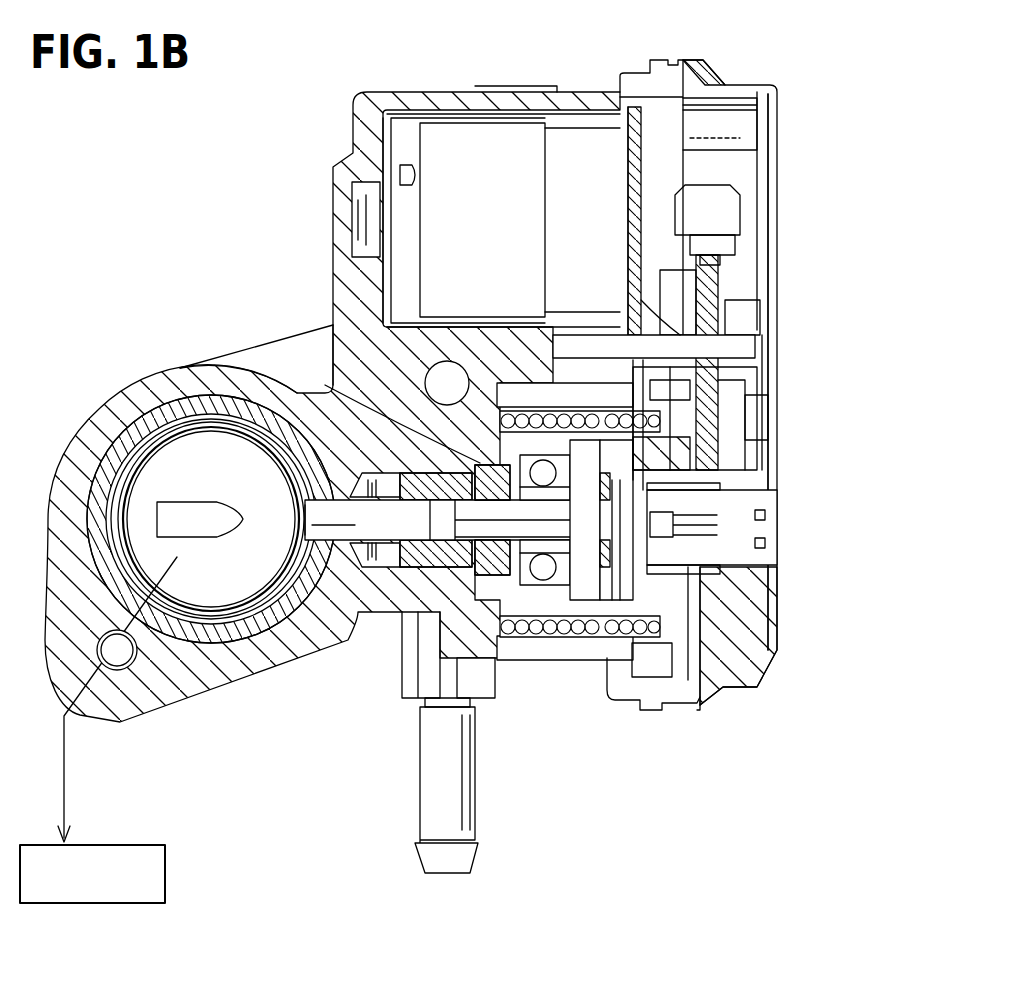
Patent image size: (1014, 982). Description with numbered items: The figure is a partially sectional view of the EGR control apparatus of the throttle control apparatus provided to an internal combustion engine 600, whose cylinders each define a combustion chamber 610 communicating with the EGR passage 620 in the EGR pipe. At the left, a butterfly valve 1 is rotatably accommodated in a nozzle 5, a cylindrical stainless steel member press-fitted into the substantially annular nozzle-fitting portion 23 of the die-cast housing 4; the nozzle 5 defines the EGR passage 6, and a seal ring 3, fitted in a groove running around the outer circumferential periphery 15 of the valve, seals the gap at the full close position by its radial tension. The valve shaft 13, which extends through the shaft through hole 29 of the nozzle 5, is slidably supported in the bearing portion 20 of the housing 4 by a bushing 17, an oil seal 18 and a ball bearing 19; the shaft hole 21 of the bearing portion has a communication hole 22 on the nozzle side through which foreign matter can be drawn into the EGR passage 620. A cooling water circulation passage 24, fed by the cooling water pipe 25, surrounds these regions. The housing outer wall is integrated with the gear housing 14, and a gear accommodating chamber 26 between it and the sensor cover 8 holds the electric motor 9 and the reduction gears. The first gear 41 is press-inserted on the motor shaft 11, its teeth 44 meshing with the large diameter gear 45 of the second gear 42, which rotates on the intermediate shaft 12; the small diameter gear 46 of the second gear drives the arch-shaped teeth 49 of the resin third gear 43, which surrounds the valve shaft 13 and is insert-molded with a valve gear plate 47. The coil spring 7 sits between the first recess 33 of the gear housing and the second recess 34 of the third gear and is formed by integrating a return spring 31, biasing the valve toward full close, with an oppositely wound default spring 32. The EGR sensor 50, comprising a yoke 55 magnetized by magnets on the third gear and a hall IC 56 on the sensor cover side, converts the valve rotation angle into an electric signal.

The butterfly valve 1 is at (160, 458).
The seal ring 3 is at (130, 465).
The housing 4 is at (335, 275).
The nozzle 5 is at (178, 632).
The EGR passage 6 is at (115, 565).
The coil spring 7 is at (645, 740).
The sensor cover 8 is at (778, 385).
The electric motor 9 is at (502, 135).
The motor shaft 11 is at (662, 205).
The intermediate shaft 12 is at (760, 345).
The valve shaft 13 is at (412, 540).
The gear housing 14 is at (650, 690).
The outer circumferential periphery 15 is at (175, 415).
The bushing 17 is at (408, 690).
The oil seal 18 is at (495, 700).
The ball bearing 19 is at (540, 600).
The bearing portion 20 is at (300, 395).
The shaft hole 21 is at (335, 630).
The communication hole 22 is at (310, 620).
The nozzle-fitting portion 23 is at (228, 650).
The cooling water circulation passage 24 is at (338, 332).
The cooling water pipe 25 is at (447, 862).
The gear accommodating chamber 26 is at (670, 280).
The shaft through hole 29 is at (245, 378).
The return spring 31 is at (560, 640).
The default spring 32 is at (615, 650).
The first recess 33 is at (505, 420).
The second recess 34 is at (612, 425).
The first gear 41 is at (725, 215).
The second gear 42 is at (725, 318).
The third gear 43 is at (678, 430).
The teeth 44 is at (715, 185).
The large diameter gear 45 is at (730, 240).
The small diameter gear 46 is at (641, 302).
The valve gear plate 47 is at (670, 560).
The teeth 49 is at (760, 418).
The EGR sensor 50 is at (795, 511).
The yoke 55 is at (720, 485).
The hall IC 56 is at (662, 535).
The internal combustion engine 600 is at (165, 872).
The combustion chamber 610 is at (143, 838).
The EGR passage 620 is at (64, 770).